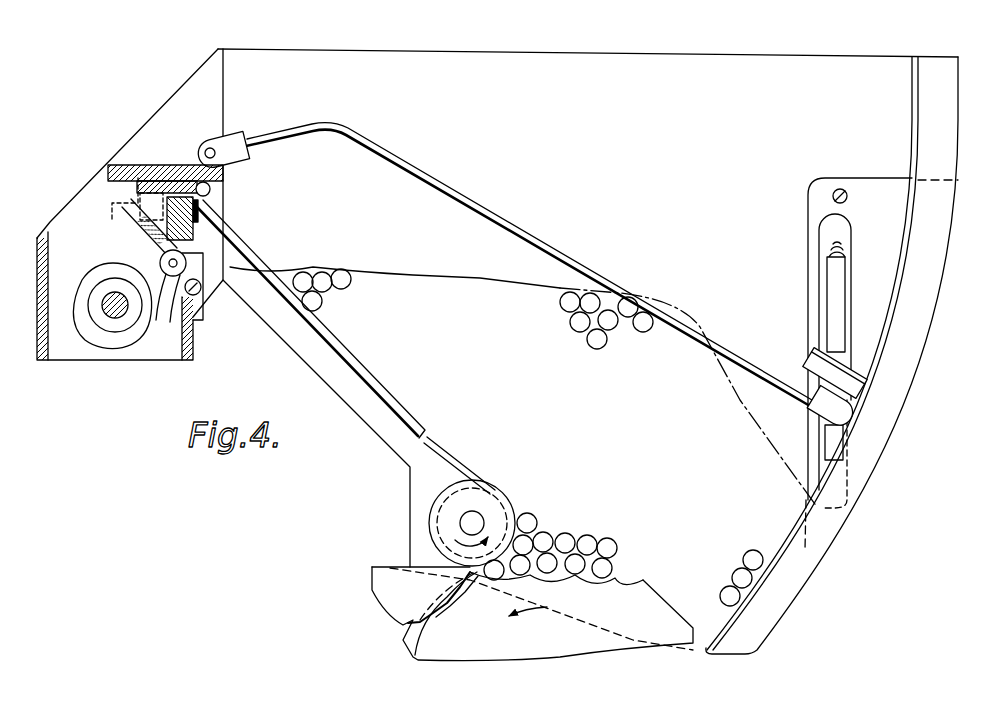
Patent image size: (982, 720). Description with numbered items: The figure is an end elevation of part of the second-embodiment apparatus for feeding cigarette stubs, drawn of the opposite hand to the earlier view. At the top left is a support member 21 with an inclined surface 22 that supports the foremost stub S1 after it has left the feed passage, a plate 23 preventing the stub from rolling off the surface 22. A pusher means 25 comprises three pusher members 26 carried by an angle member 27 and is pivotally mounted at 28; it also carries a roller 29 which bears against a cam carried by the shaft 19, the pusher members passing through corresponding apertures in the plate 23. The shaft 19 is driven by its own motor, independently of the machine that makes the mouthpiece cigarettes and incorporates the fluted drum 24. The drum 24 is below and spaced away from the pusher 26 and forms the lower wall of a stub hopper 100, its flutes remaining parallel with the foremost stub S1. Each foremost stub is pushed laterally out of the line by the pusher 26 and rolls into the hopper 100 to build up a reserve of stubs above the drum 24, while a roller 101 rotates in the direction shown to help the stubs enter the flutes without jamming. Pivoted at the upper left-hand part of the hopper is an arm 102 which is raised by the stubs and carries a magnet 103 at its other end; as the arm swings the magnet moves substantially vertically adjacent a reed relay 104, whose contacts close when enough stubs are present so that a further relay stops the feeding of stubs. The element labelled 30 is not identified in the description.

The stub hopper 100 is at (822, 75).
The roller 101 is at (485, 498).
The arm 102 is at (428, 170).
The magnet 103 is at (807, 360).
The reed relay 104 is at (838, 303).
The shaft 19 is at (113, 318).
The support member 21 is at (193, 207).
The inclined surface 22 is at (197, 208).
The plate 23 is at (163, 212).
The fluted drum 24 is at (640, 617).
The pusher means 25 is at (122, 240).
The pusher members 26 is at (162, 183).
The angle member 27 is at (127, 198).
The pivot 28 is at (199, 295).
The roller 29 is at (173, 278).
The cam 30 is at (148, 348).
The foremost stub S1 is at (212, 190).